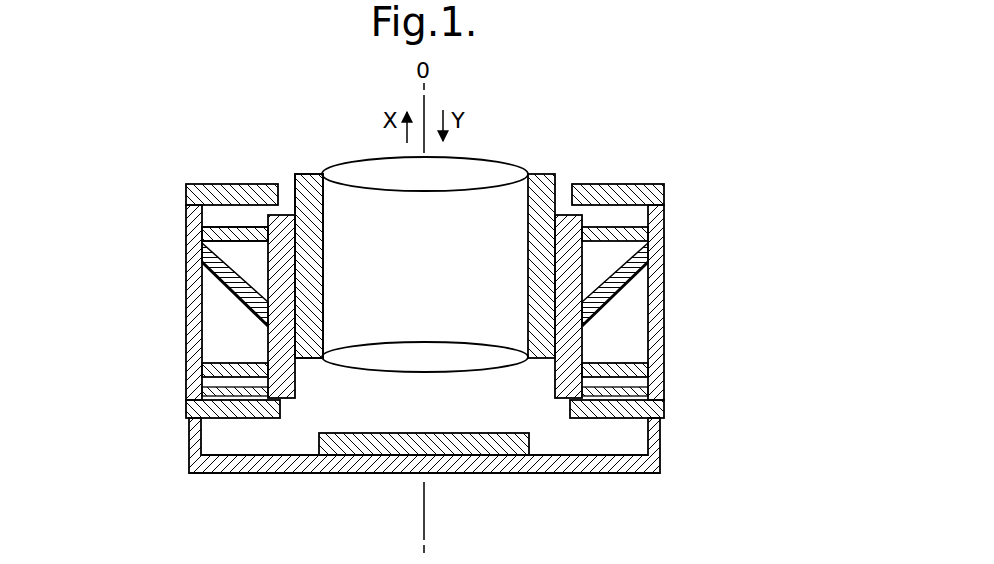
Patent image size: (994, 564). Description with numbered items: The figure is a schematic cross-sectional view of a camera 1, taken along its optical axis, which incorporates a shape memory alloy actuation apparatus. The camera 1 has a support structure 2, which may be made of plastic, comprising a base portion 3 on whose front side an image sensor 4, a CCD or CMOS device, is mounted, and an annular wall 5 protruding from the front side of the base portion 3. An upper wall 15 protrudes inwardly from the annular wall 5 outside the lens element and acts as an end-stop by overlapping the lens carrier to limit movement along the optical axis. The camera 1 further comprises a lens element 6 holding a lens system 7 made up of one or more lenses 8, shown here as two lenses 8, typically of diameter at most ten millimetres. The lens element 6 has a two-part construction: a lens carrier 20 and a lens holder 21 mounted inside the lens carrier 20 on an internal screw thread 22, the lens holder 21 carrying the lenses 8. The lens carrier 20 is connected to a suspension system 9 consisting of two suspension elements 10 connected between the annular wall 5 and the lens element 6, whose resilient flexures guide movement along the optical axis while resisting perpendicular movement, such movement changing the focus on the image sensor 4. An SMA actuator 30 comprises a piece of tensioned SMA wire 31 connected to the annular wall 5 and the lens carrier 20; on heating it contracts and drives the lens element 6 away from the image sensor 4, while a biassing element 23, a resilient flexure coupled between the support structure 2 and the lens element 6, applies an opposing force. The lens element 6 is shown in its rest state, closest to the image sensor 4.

The camera 1 is at (117, 341).
The support structure 2 is at (653, 440).
The base portion 3 is at (578, 470).
The image sensor 4 is at (366, 444).
The annular wall 5 is at (664, 300).
The lens element 6 is at (542, 151).
The lens system 7 is at (352, 142).
The lens 8 is at (477, 170).
The suspension system 9 is at (233, 224).
The suspension element 10 is at (226, 232).
The upper wall 15 is at (608, 183).
The lens carrier 20 is at (273, 304).
The lens holder 21 is at (300, 265).
The internal screw thread 22 is at (555, 392).
The biassing element 23 is at (640, 389).
The SMA actuator 30 is at (641, 266).
The SMA wire 31 is at (629, 276).